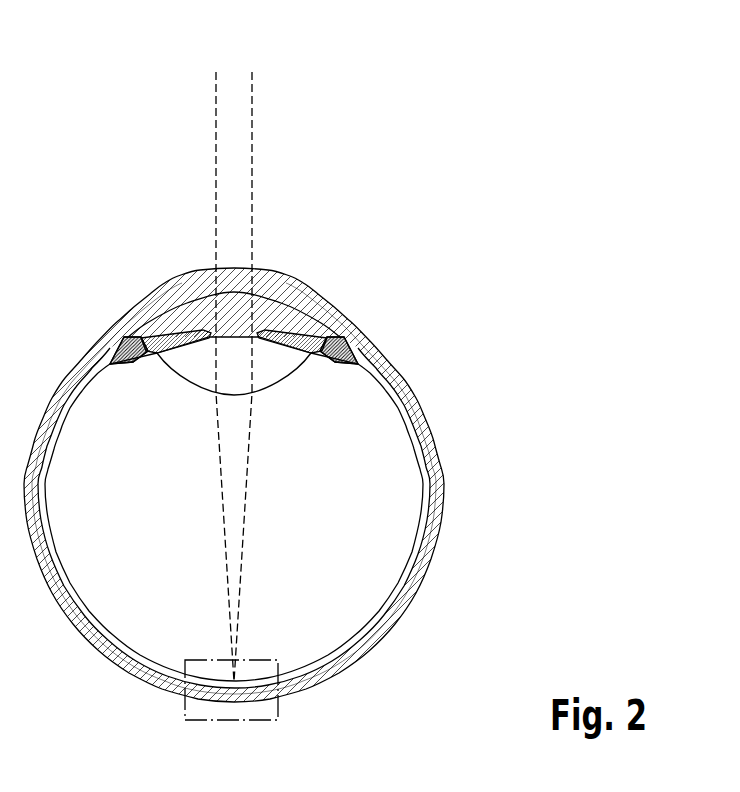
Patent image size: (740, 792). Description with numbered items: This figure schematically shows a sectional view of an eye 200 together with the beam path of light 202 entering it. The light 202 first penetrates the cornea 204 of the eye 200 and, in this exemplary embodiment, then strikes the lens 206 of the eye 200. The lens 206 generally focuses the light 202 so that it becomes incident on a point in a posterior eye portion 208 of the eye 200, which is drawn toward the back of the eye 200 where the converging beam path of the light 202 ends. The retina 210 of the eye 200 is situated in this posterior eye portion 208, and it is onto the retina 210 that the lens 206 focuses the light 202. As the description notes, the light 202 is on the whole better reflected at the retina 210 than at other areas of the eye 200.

The eye 200 is at (484, 179).
The light 202 is at (214, 133).
The cornea 204 is at (195, 365).
The lens 206 is at (298, 293).
The posterior eye portion 208 is at (270, 640).
The retina 210 is at (220, 682).